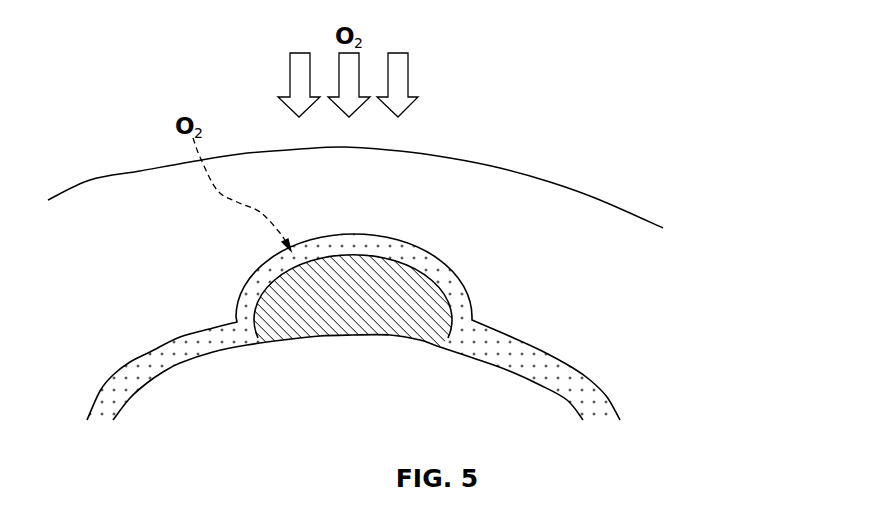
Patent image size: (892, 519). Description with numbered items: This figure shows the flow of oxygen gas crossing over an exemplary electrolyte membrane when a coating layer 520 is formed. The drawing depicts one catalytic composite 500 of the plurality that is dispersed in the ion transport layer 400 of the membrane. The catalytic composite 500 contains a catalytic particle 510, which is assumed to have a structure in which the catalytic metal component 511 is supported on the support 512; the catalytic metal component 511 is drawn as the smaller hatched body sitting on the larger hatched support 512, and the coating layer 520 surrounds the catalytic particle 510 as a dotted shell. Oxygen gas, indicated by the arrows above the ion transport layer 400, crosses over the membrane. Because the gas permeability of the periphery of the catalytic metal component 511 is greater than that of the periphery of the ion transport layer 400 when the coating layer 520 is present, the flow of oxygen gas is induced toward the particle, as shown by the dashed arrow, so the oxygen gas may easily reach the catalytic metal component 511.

The catalytic composite 500 is at (58, 117).
The ion transport layer 400 is at (510, 189).
The catalytic particle 510 is at (469, 337).
The catalytic metal component 511 is at (413, 308).
The support 512 is at (487, 382).
The coating layer 520 is at (602, 407).